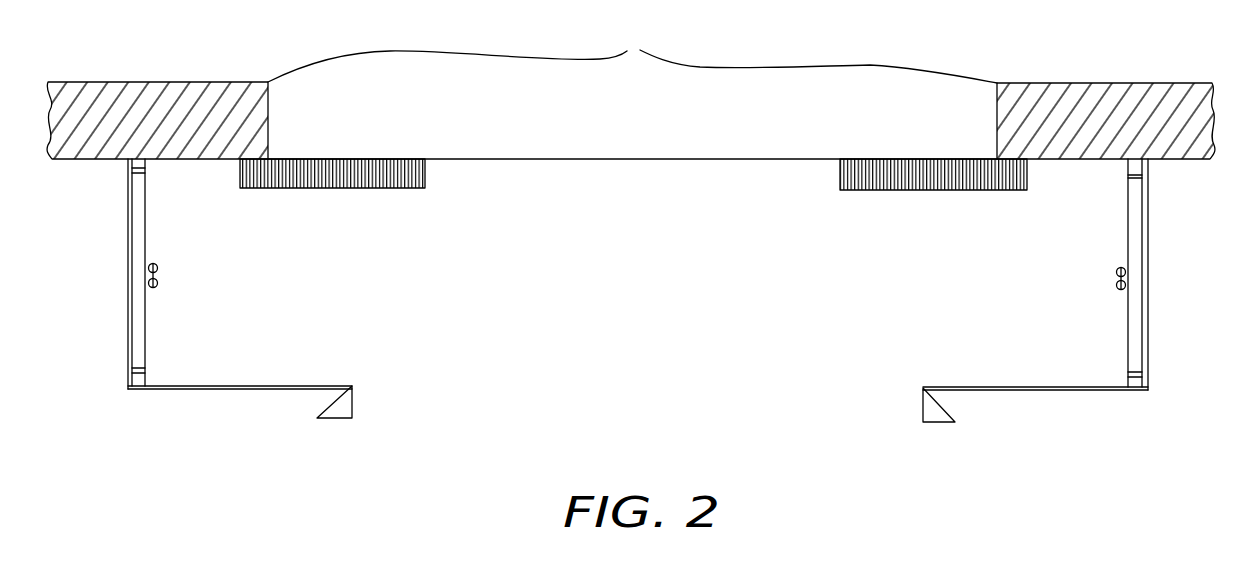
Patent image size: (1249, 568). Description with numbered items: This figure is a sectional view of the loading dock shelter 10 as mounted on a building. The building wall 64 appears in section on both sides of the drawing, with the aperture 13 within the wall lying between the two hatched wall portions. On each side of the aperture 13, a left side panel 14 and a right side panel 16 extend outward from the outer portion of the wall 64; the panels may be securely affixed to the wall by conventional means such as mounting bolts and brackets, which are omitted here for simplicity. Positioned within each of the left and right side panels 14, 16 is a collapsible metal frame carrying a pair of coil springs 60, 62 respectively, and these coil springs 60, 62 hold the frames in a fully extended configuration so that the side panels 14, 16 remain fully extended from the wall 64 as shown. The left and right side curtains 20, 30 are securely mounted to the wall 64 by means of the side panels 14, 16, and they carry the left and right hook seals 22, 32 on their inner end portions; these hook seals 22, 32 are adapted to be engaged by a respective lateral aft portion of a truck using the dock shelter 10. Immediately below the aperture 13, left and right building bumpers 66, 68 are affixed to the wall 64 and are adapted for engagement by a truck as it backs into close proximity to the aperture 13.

The loading dock shelter 10 is at (652, 312).
The aperture 13 is at (632, 90).
The left side panel 14 is at (133, 301).
The right side panel 16 is at (1150, 315).
The left side curtain 20 is at (228, 395).
The left hook seal 22 is at (340, 420).
The right side curtain 30 is at (1025, 398).
The right hook seal 32 is at (923, 408).
The coil springs 60 is at (164, 277).
The coil springs 62 is at (1112, 278).
The wall 64 is at (190, 98).
The left building bumper 66 is at (333, 173).
The right building bumper 68 is at (920, 183).